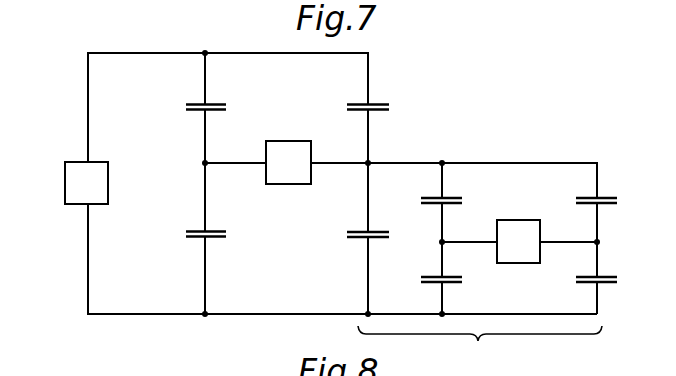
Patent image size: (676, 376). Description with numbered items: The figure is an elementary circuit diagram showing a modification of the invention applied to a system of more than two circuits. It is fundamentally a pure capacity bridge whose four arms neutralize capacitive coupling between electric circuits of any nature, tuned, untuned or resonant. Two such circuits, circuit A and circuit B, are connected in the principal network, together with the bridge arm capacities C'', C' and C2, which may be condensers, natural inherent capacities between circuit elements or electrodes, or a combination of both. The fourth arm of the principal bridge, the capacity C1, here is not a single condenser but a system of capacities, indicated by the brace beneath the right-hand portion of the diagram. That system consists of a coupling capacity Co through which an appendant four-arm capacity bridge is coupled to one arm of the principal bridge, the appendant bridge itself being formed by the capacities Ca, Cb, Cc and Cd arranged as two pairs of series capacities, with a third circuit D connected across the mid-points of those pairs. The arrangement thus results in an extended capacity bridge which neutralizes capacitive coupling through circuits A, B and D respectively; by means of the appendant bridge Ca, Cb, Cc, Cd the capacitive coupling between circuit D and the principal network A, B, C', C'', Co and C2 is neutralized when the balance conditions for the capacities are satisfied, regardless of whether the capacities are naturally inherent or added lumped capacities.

The electric circuit A is at (86, 183).
The electric circuit B is at (288, 162).
The electric circuit D is at (518, 241).
The capacity C'' is at (194, 105).
The capacity C' is at (359, 105).
The capacity C2 is at (193, 238).
The coupling capacity Co is at (352, 237).
The capacity Cb is at (456, 201).
The capacity Cd is at (456, 279).
The capacity Ca is at (612, 201).
The capacity Cc is at (611, 279).
The capacity C1 is at (480, 348).